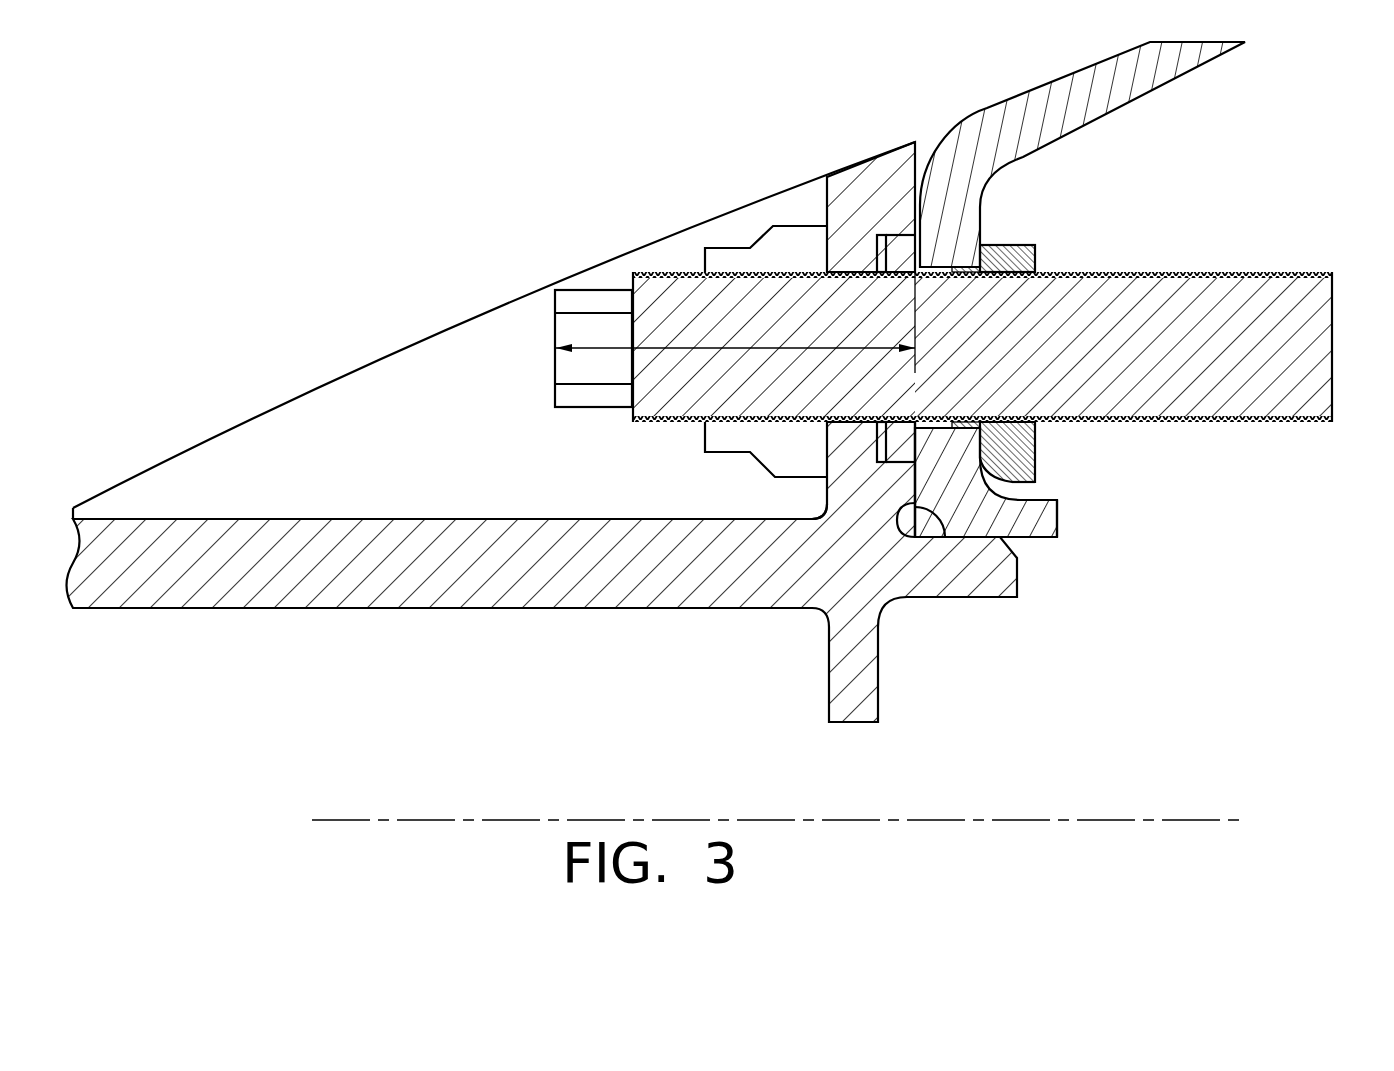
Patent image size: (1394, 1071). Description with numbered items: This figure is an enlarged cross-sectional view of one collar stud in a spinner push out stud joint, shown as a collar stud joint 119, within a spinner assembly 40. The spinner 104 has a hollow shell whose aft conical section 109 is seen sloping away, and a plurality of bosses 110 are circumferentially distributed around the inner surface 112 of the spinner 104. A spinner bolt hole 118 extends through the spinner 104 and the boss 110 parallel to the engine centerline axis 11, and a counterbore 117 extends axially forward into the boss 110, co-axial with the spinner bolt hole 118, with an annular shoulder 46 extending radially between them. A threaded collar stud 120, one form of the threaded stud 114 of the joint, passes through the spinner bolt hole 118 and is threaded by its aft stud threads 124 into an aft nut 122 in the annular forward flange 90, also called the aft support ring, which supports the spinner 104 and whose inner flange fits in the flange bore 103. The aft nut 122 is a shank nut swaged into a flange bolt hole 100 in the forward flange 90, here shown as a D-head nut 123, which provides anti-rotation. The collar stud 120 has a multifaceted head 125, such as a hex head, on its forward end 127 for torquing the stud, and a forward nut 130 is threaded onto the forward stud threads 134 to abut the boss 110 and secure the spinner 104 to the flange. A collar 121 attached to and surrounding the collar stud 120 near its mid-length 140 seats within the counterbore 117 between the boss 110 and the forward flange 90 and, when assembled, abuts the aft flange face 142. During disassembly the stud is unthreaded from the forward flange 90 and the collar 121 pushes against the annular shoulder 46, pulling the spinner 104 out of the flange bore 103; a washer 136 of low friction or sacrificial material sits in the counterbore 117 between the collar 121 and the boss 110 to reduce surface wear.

The engine centerline axis 11 is at (1100, 820).
The spinner assembly 40 is at (540, 667).
The annular shoulder 46 is at (888, 250).
The forward flange 90 is at (987, 250).
The flange bolt hole 100 is at (982, 428).
The flange bore 103 is at (1040, 538).
The spinner 104 is at (868, 160).
The aft conical section 109 is at (435, 337).
The boss 110 is at (825, 200).
The inner surface 112 is at (263, 418).
The threaded stud 114 is at (1308, 332).
The counterbore 117 is at (1180, 423).
The spinner bolt hole 118 is at (852, 279).
The collar stud joint 119 is at (940, 257).
The collar stud 120 is at (1248, 302).
The collar 121 is at (903, 430).
The aft nut 122 is at (1037, 254).
The D-head nut 123 is at (1040, 470).
The aft stud thread 124 is at (1130, 277).
The multifaceted head 125 is at (588, 288).
The forward end 127 is at (665, 422).
The forward nut 130 is at (708, 470).
The forward stud thread 134 is at (690, 422).
The washer 136 is at (880, 443).
The mid-length 140 is at (807, 350).
The aft flange face 142 is at (900, 528).